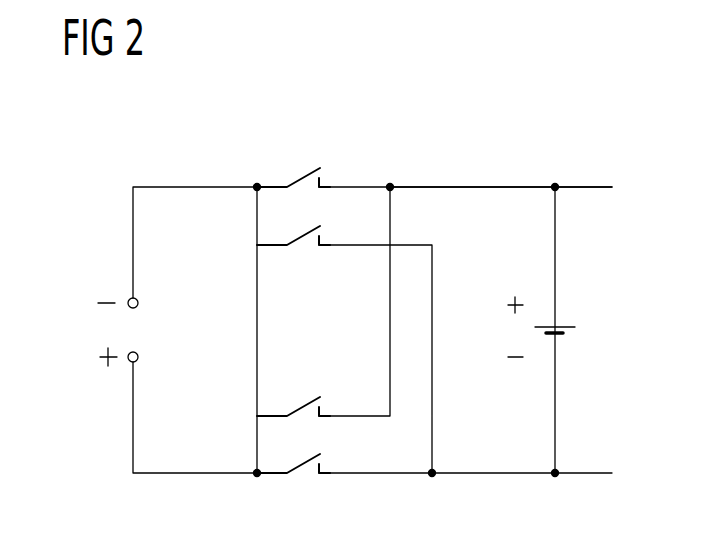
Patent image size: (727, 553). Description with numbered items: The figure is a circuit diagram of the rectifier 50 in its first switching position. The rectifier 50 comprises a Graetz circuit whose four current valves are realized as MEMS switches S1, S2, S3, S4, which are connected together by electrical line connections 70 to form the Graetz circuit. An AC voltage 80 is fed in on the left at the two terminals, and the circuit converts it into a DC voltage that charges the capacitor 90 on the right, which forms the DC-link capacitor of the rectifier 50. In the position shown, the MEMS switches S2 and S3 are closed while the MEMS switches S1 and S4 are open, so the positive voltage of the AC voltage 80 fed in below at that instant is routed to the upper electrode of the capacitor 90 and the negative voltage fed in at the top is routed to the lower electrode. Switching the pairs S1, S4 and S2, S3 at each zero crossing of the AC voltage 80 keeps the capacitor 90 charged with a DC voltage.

The rectifier 50 is at (432, 130).
The electrical line connections 70 is at (487, 183).
The AC voltage 80 is at (123, 332).
The capacitor 90 is at (560, 325).
The MEMS switch S1 is at (305, 175).
The MEMS switch S2 is at (303, 248).
The MEMS switch S3 is at (305, 405).
The MEMS switch S4 is at (305, 467).